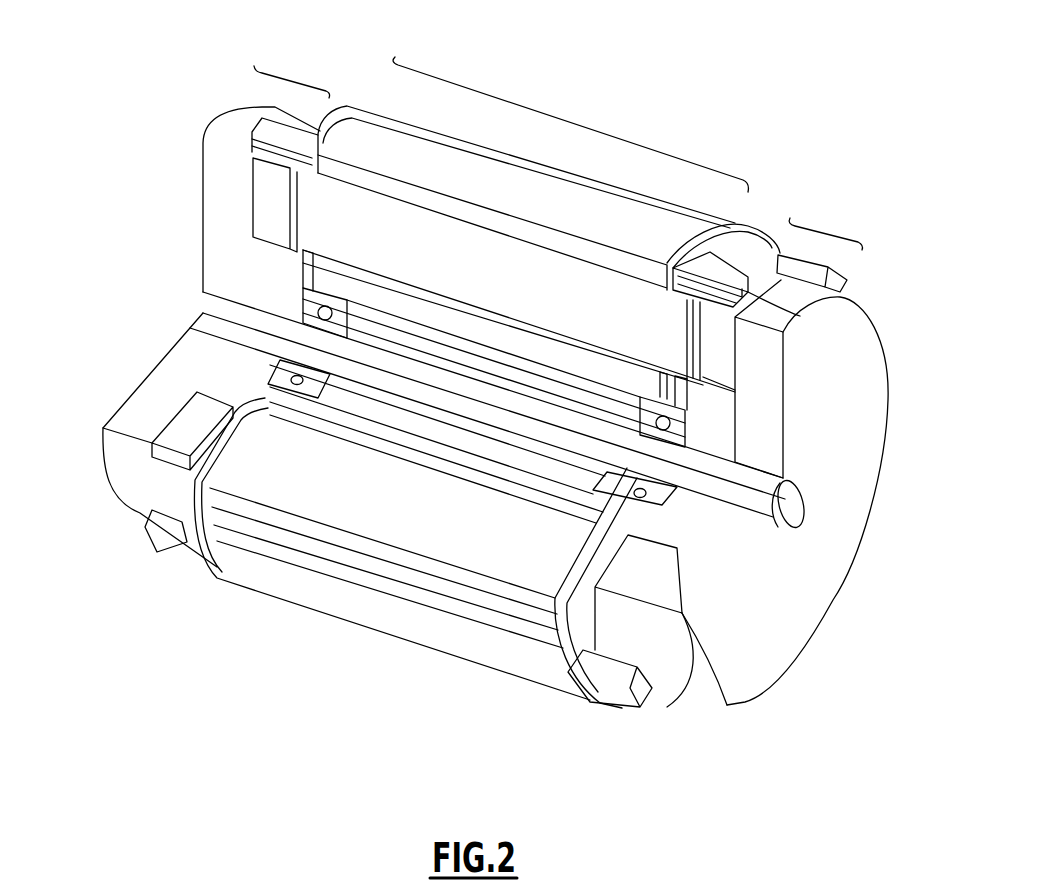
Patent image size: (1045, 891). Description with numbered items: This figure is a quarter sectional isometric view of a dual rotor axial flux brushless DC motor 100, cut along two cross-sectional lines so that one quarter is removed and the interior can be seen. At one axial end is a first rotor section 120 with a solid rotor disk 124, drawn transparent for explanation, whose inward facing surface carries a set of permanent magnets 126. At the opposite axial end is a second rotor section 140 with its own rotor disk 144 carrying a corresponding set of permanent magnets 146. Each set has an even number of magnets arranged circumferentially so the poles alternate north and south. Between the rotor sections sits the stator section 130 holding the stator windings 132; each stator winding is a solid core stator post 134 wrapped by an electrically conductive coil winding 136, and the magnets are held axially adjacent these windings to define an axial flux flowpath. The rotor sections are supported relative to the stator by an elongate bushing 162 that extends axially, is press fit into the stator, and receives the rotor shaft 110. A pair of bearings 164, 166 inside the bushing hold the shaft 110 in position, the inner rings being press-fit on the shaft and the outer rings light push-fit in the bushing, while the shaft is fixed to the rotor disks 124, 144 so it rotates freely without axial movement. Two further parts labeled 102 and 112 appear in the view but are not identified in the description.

The BLDC motor 100 is at (748, 98).
The clip 102 is at (190, 503).
The rotor shaft 110 is at (795, 518).
The pin 112 is at (795, 470).
The first rotor section 120 is at (292, 78).
The rotor disk 124 is at (120, 467).
The permanent magnets 126 is at (272, 197).
The stator section 130 is at (557, 108).
The stator windings 132 is at (492, 193).
The stator post 134 is at (383, 230).
The coil winding 136 is at (590, 258).
The second rotor section 140 is at (832, 223).
The rotor disk 144 is at (735, 685).
The permanent magnets 146 is at (715, 360).
The elongate bushing 162 is at (458, 345).
The bearing 164 is at (327, 305).
The bearing 166 is at (655, 390).